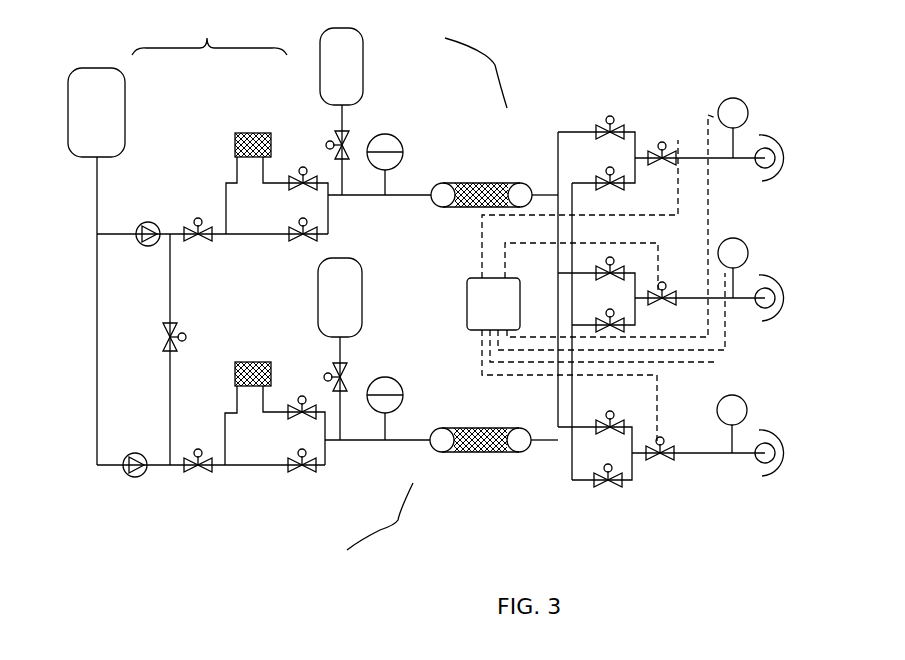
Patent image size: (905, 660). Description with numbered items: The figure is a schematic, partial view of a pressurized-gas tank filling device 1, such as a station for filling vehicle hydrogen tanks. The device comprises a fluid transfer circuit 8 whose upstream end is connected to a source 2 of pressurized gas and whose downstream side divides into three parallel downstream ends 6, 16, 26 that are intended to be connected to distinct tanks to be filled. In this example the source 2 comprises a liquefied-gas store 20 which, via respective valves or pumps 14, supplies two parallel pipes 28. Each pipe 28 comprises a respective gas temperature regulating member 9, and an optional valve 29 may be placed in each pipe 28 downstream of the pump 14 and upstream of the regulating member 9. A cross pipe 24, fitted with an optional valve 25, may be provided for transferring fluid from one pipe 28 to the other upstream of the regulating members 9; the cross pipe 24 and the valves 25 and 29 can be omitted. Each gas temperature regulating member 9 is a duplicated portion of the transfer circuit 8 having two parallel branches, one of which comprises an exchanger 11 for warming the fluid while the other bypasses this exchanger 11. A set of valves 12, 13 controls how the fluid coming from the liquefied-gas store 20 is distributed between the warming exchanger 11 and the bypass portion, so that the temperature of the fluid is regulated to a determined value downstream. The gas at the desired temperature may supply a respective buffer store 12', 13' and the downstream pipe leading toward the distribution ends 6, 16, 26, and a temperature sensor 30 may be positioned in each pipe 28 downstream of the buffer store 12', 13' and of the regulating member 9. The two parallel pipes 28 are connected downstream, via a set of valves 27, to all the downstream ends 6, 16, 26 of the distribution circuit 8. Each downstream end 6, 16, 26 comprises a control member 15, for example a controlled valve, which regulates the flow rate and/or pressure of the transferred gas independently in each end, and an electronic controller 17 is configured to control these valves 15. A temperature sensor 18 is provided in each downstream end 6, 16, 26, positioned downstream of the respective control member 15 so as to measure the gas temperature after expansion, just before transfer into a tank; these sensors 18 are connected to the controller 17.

The pressurized-gas tank filling device 1 is at (288, 538).
The source of pressurized gas 2 is at (209, 36).
The downstream end 6 is at (700, 157).
The fluid transfer circuit 8 is at (93, 210).
The gas temperature regulating member 9 is at (427, 294).
The exchanger 11 is at (277, 143).
The valve of the temperature regulating member 12 is at (381, 296).
The buffer store 12' is at (317, 234).
The valve of the temperature regulating member 13 is at (393, 315).
The buffer store 13' is at (225, 147).
The pump 14 is at (145, 450).
The control member 15 is at (672, 280).
The downstream end 16 is at (697, 299).
The electronic controller 17 is at (503, 312).
The temperature sensor 18 is at (737, 110).
The liquefied-gas store 20 is at (112, 113).
The cross pipe 24 is at (167, 385).
The valve 25 is at (160, 347).
The downstream end 26 is at (197, 475).
The set of valves 27 is at (600, 172).
The parallel pipe 28 is at (422, 197).
The valve 29 is at (197, 250).
The temperature sensor 30 is at (397, 153).